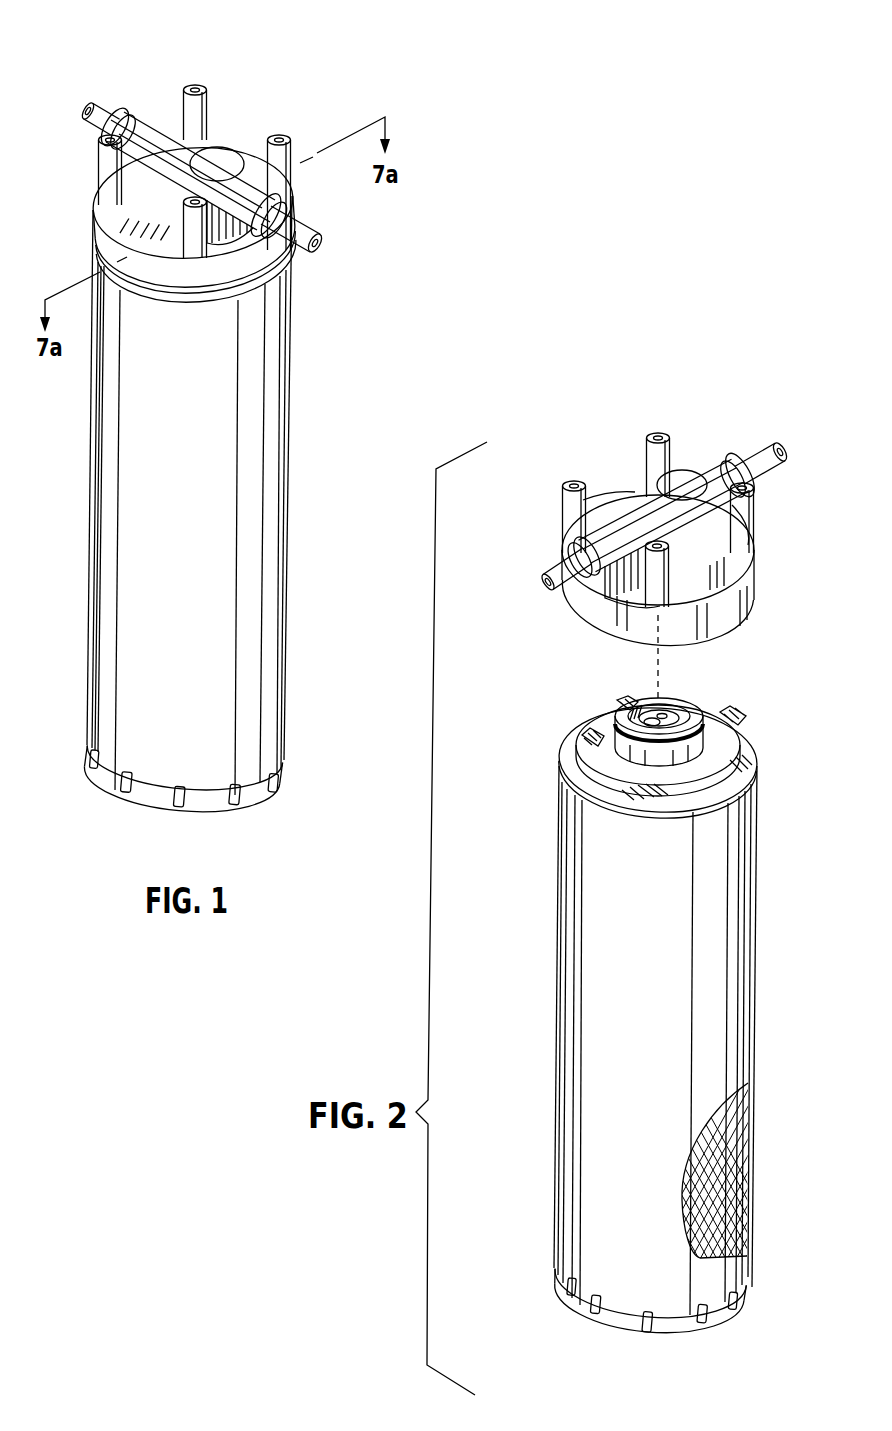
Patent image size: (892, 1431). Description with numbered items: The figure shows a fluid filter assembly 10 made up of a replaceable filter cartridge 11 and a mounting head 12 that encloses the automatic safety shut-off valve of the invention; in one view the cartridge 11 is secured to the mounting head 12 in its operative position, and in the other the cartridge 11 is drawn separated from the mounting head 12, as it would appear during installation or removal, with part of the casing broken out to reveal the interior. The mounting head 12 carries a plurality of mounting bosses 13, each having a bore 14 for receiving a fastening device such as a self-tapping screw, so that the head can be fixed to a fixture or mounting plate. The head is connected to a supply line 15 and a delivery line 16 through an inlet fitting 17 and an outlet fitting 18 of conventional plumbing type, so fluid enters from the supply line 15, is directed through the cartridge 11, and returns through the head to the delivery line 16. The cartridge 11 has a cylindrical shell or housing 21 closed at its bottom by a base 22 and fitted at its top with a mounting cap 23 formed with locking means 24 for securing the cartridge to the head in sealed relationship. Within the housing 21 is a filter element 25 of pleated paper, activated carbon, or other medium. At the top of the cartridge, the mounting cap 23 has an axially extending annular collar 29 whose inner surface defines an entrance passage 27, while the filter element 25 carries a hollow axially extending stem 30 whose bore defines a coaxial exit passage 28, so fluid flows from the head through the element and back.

In FIG. 1, the fluid filter assembly 10 is at (300, 344).
In FIG. 2, the fluid filter assembly 10 is at (536, 726).
In FIG. 1, the replaceable filter cartridge 11 is at (297, 460).
In FIG. 2, the replaceable filter cartridge 11 is at (755, 982).
In FIG. 1, the mounting head 12 is at (90, 236).
In FIG. 2, the mounting head 12 is at (745, 567).
In FIG. 1, the mounting bosses 13 is at (205, 105).
In FIG. 2, the mounting bosses 13 is at (672, 446).
In FIG. 1, the bore 14 is at (197, 88).
In FIG. 2, the bore 14 is at (657, 436).
In FIG. 1, the supply line 15 is at (315, 247).
In FIG. 2, the supply line 15 is at (776, 445).
In FIG. 1, the delivery line 16 is at (97, 100).
In FIG. 2, the delivery line 16 is at (549, 592).
In FIG. 1, the inlet fitting 17 is at (282, 200).
In FIG. 2, the inlet fitting 17 is at (733, 455).
In FIG. 1, the outlet fitting 18 is at (130, 110).
In FIG. 2, the outlet fitting 18 is at (562, 545).
In FIG. 1, the cylindrical shell or housing 21 is at (262, 676).
In FIG. 2, the cylindrical shell or housing 21 is at (723, 1064).
In FIG. 1, the base 22 is at (148, 800).
In FIG. 2, the base 22 is at (583, 1303).
In FIG. 2, the mounting cap 23 is at (749, 757).
In FIG. 2, the locking means 24 is at (605, 768).
In FIG. 2, the filter element 25 is at (748, 1217).
In FIG. 2, the entrance passage 27 is at (667, 705).
In FIG. 2, the exit passage 28 is at (652, 718).
In FIG. 2, the annular collar 29 is at (690, 703).
In FIG. 2, the hollow stem 30 is at (650, 720).